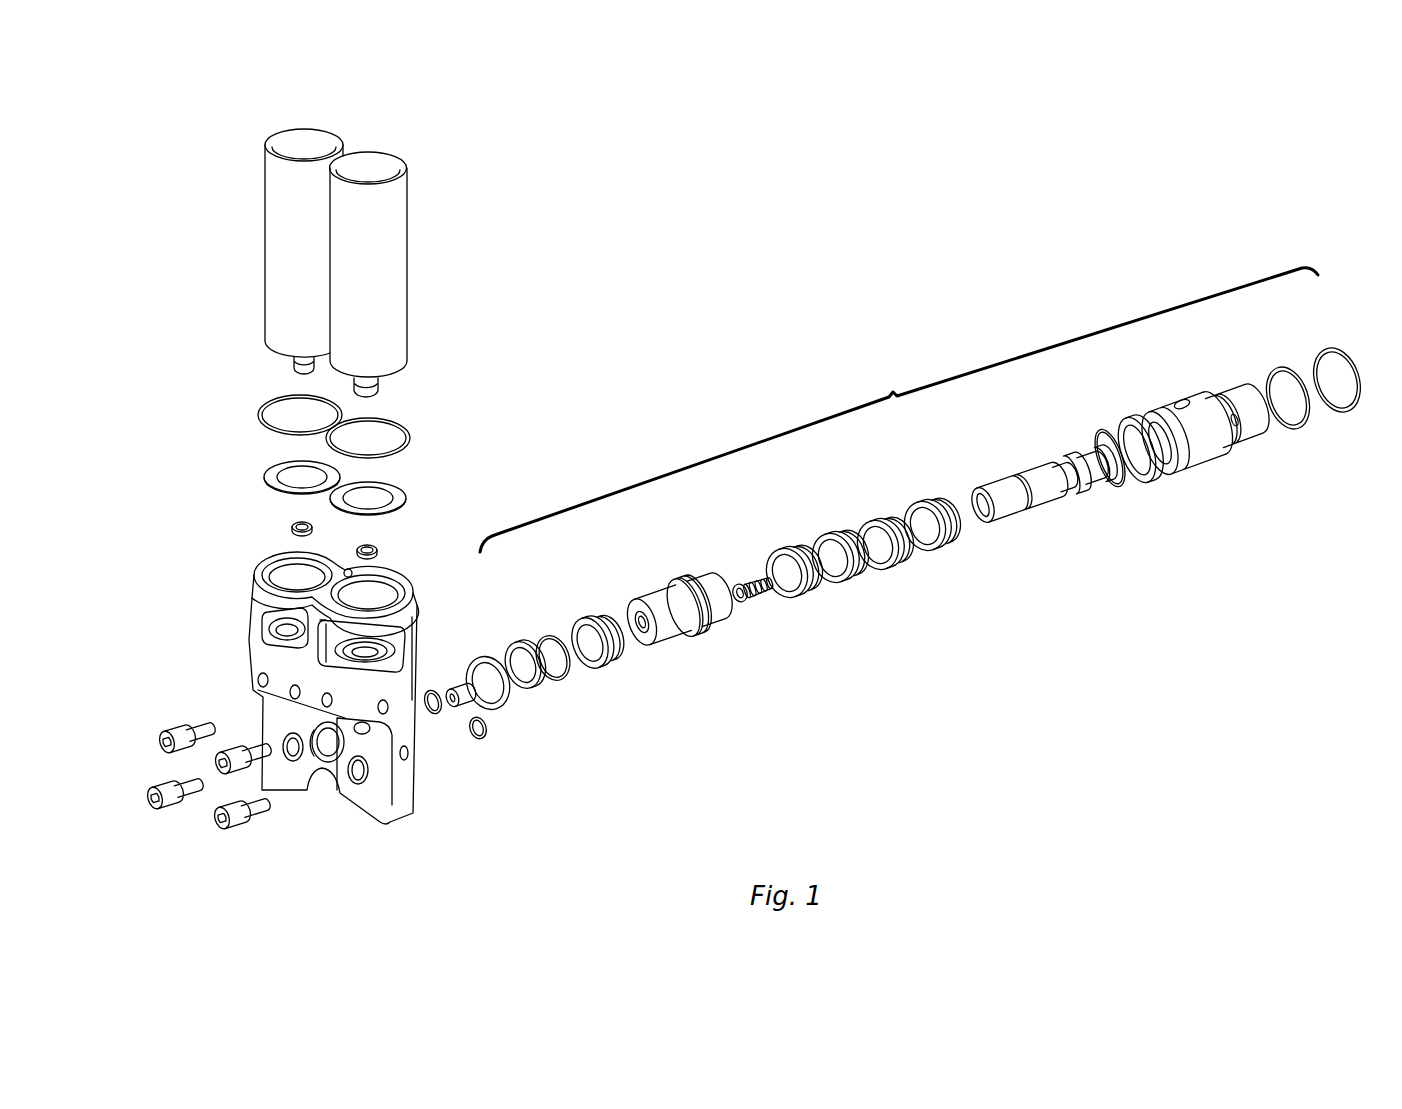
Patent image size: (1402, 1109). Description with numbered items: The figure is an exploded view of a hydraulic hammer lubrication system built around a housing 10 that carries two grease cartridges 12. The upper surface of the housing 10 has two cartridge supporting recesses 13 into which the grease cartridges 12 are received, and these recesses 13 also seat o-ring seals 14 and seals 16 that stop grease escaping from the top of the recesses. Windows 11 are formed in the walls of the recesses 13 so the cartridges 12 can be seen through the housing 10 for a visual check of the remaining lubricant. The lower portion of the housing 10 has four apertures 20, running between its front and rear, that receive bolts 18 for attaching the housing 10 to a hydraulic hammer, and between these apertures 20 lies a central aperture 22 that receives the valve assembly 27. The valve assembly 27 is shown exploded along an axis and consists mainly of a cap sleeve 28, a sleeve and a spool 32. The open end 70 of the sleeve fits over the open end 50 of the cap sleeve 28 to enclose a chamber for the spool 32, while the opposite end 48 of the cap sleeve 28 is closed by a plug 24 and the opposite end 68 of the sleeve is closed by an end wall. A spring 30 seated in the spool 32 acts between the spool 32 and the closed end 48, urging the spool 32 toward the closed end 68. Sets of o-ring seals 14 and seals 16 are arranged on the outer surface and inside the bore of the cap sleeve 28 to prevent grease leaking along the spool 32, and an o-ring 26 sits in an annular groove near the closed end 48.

The housing 10 is at (329, 736).
The windows 11 is at (353, 655).
The grease cartridges 12 is at (281, 187).
The cartridge supporting recesses 13 is at (290, 577).
The o-ring seals 14 is at (262, 405).
The seals 16 is at (272, 470).
The bolts 18 is at (241, 832).
The apertures 20 is at (293, 762).
The central aperture 22 is at (332, 752).
The plug 24 is at (458, 688).
The o-ring 26 is at (500, 706).
The valve assembly 27 is at (902, 392).
The cap sleeve 28 is at (648, 626).
The spring 30 is at (758, 600).
The spool 32 is at (1103, 472).
The closed end of the cap sleeve 48 is at (680, 623).
The open end of the cap sleeve 50 is at (736, 586).
The closed end of the sleeve 68 is at (1236, 428).
The open end of the sleeve 70 is at (1138, 416).